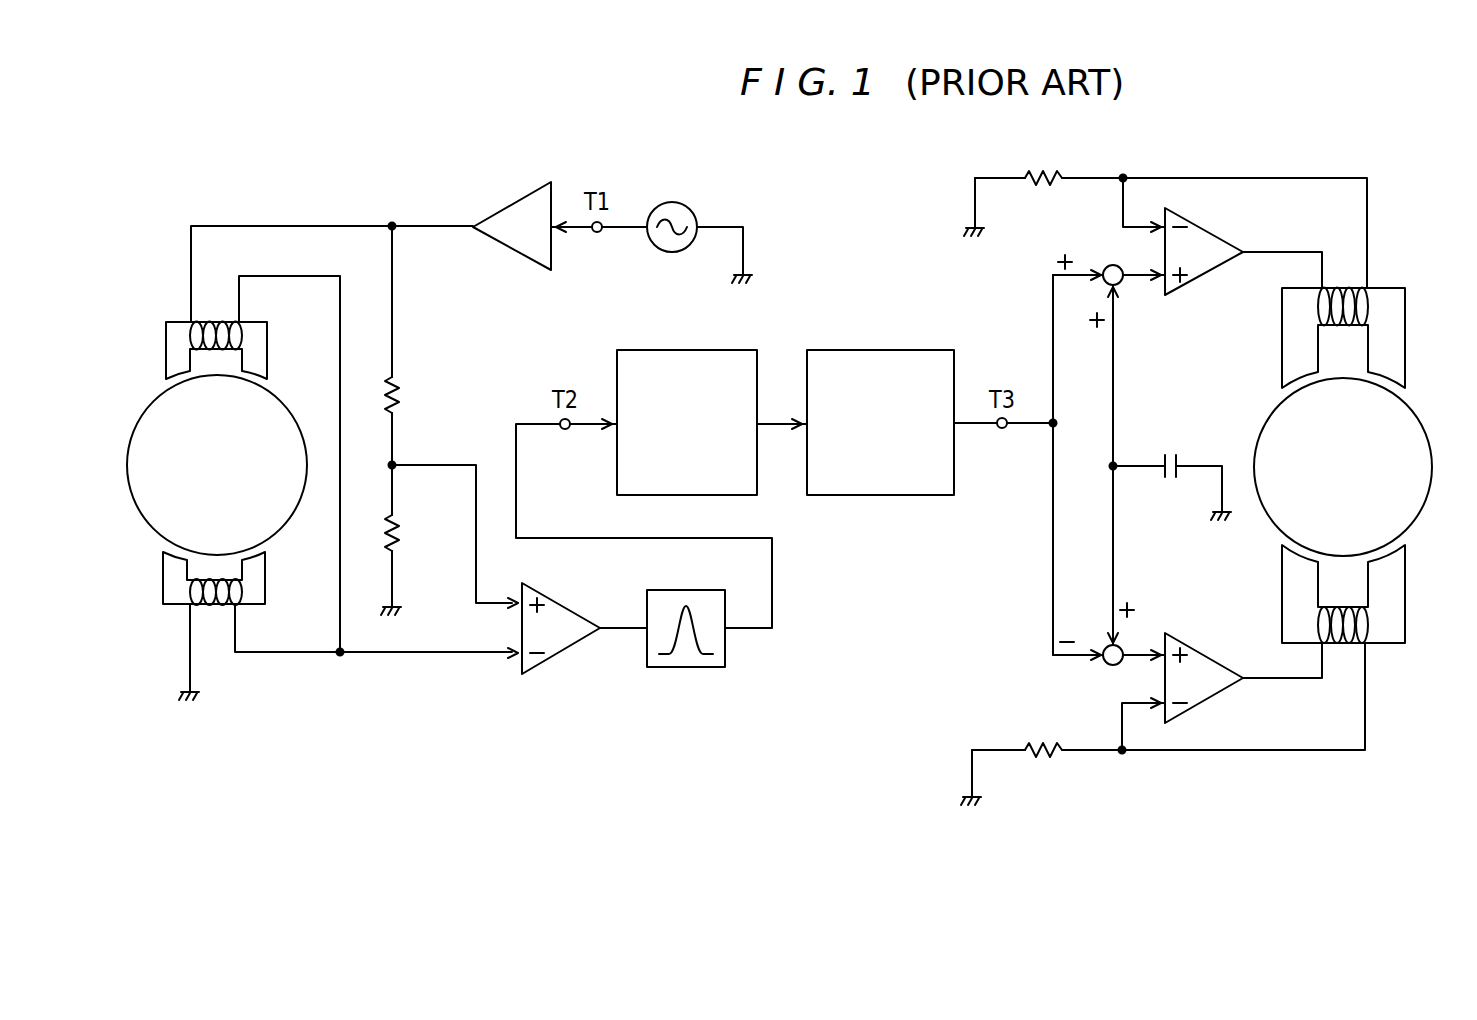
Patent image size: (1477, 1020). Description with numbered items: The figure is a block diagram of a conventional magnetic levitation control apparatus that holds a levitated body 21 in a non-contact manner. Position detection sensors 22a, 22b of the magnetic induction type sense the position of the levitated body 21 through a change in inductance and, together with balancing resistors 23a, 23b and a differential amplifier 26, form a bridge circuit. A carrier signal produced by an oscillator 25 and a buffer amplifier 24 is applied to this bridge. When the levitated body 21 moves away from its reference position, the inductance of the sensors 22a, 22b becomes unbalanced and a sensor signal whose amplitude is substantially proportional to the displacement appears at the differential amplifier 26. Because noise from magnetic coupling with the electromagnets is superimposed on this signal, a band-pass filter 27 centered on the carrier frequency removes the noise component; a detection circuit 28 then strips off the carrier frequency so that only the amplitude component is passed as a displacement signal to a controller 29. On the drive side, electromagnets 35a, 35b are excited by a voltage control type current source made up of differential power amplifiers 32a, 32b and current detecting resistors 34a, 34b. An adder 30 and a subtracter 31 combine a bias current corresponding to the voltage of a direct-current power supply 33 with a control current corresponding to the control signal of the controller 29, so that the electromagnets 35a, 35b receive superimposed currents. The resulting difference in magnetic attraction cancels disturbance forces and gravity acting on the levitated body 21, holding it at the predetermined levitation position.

The levitated body 21 is at (294, 410).
The position detection sensor 22a is at (270, 340).
The position detection sensor 22b is at (265, 580).
The balancing resistor 23a is at (399, 386).
The balancing resistor 23b is at (399, 518).
The buffer amplifier 24 is at (500, 211).
The oscillator 25 is at (679, 200).
The differential amplifier 26 is at (578, 605).
The band-pass filter 27 is at (692, 590).
The detection circuit 28 is at (676, 348).
The controller 29 is at (890, 348).
The adder 30 is at (1106, 265).
The subtracter 31 is at (1106, 668).
The differential power amplifier 32a is at (1222, 246).
The differential power amplifier 32b is at (1216, 650).
The direct-current power supply 33 is at (1163, 478).
The current detecting resistor 34a is at (1044, 171).
The current detecting resistor 34b is at (1044, 762).
The electromagnet 35a is at (1402, 287).
The electromagnet 35b is at (1406, 594).